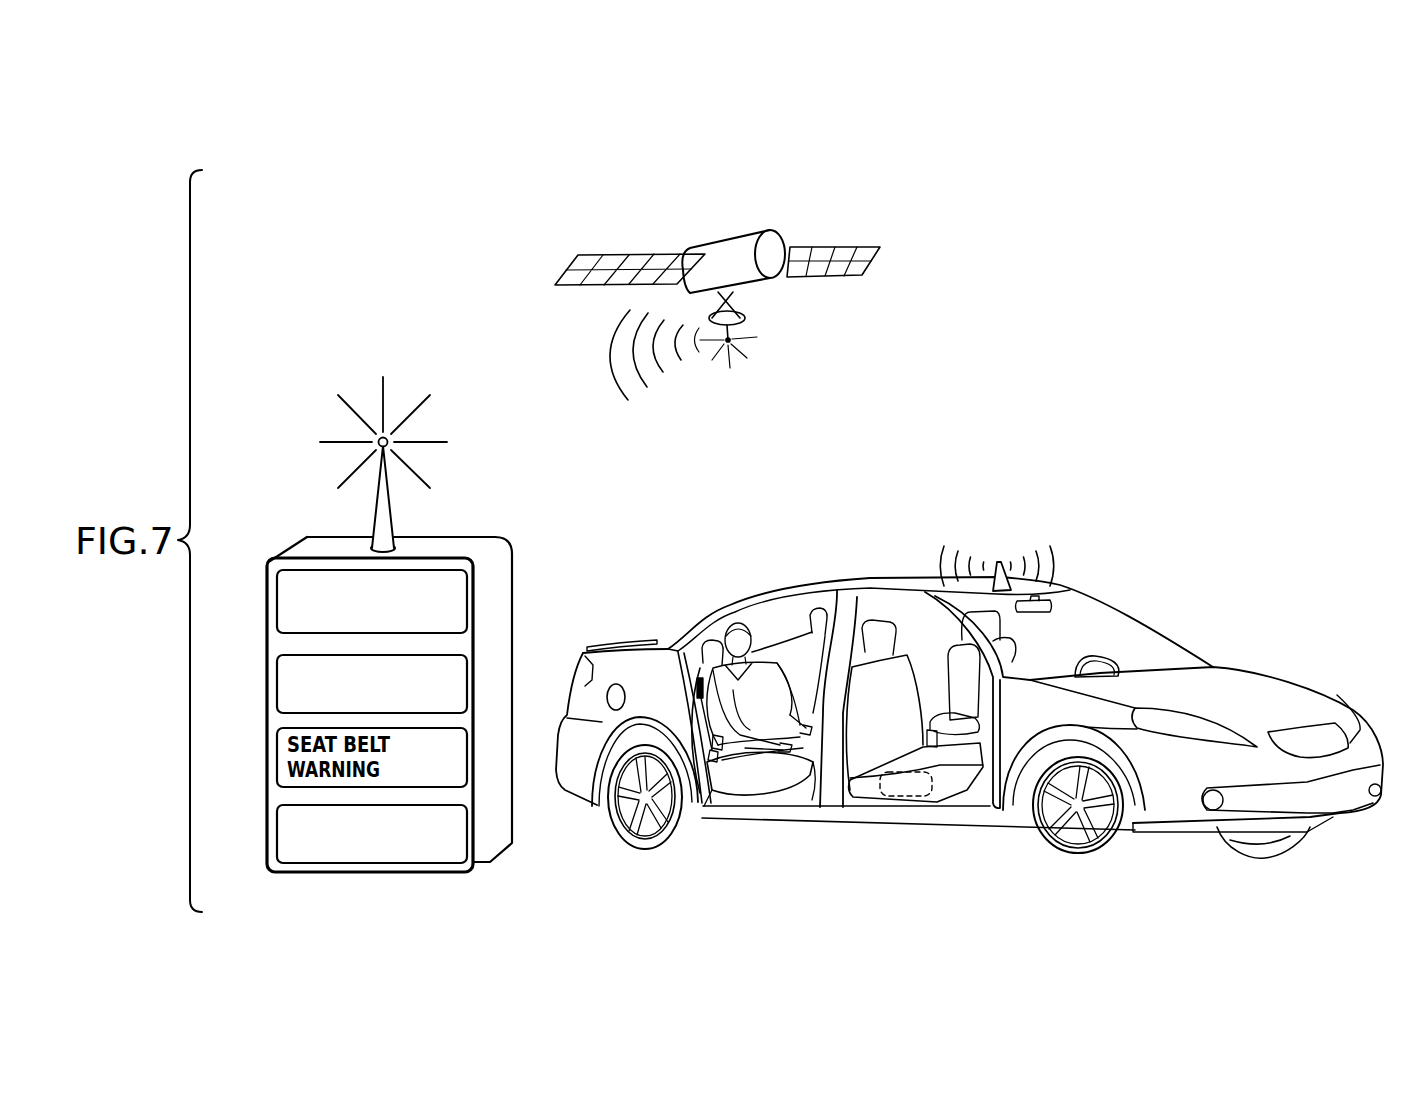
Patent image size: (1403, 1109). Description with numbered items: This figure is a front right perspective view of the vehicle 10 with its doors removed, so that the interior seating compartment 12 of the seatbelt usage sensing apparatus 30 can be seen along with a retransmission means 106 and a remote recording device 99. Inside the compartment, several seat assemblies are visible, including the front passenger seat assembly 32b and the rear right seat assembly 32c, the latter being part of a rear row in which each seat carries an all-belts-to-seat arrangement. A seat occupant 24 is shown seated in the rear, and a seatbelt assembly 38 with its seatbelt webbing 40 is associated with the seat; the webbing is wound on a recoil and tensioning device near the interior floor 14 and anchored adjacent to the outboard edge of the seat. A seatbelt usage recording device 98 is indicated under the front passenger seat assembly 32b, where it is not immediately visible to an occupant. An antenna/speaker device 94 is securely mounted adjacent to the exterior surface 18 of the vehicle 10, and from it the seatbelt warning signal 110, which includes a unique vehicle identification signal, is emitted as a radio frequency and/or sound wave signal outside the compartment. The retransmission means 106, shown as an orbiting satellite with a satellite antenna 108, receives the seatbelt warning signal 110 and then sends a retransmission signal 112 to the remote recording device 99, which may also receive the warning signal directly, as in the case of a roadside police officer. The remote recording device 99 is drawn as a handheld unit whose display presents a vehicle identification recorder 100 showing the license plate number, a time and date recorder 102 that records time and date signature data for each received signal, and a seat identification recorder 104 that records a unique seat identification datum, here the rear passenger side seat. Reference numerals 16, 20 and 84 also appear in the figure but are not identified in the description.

The vehicle 10 is at (1300, 670).
The interior seating compartment 12 is at (902, 628).
The interior floor 14 is at (985, 793).
The B-pillar 16 is at (885, 605).
The exterior surface 18 is at (1187, 797).
The rear body / trunk 20 is at (638, 677).
The seat occupant 24 is at (767, 683).
The seatbelt usage sensing apparatus 30 is at (1149, 469).
The front passenger seat assembly 32b is at (867, 790).
The rear right seat assembly 32c is at (762, 780).
The seatbelt assembly 38 is at (700, 690).
The seatbelt webbing 40 is at (712, 757).
The wireless signal 84 is at (987, 548).
The antenna/speaker device 94 is at (998, 562).
The seatbelt usage recording device 98 is at (902, 793).
The remote recording device 99 is at (502, 572).
The vehicle identification recorder 100 is at (277, 603).
The time and date recorder 102 is at (277, 683).
The seat identification recorder 104 is at (277, 820).
The retransmission means 106 is at (722, 252).
The satellite antenna 108 is at (743, 313).
The seatbelt warning signal 110 is at (1060, 568).
The retransmission signal 112 is at (650, 367).